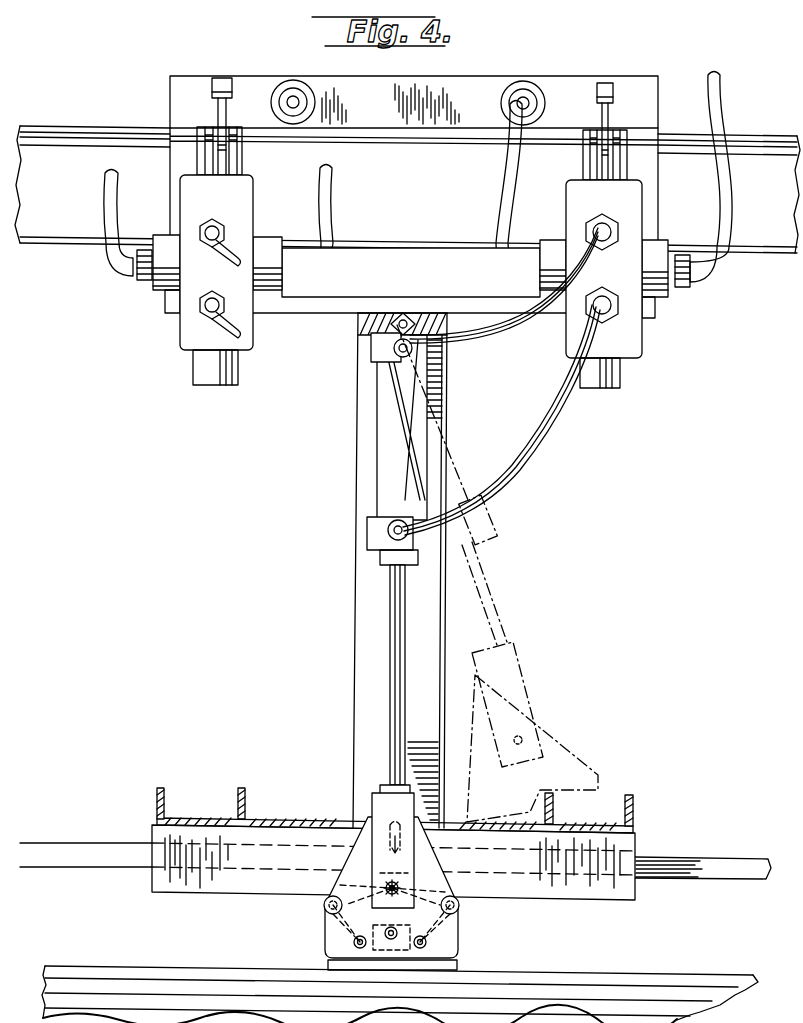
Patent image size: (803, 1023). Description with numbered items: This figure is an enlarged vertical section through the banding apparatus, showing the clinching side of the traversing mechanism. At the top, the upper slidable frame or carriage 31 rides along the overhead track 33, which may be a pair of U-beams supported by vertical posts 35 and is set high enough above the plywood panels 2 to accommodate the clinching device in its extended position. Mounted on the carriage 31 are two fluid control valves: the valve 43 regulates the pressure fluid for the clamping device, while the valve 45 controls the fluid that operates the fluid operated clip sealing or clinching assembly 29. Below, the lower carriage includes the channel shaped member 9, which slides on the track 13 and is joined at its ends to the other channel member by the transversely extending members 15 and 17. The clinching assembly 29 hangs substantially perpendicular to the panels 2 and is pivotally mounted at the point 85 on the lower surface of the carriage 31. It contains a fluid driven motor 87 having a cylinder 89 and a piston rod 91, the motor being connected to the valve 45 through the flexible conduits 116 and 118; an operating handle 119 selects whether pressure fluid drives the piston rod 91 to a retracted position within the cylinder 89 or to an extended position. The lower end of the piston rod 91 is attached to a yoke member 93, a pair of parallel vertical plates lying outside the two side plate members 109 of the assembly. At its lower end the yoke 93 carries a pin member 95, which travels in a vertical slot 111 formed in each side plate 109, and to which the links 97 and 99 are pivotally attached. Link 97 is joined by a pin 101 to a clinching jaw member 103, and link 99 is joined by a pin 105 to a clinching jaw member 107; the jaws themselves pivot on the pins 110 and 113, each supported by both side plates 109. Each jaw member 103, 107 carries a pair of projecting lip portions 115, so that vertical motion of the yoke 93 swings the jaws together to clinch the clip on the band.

The panels 2 is at (552, 975).
The channel shaped member 9 is at (636, 850).
The track 13 is at (698, 856).
The transversely extending member 15 is at (634, 810).
The transversely extending member 17 is at (157, 800).
The clinching assembly 29 is at (341, 821).
The upper slidable frame or carriage 31 is at (345, 293).
The track 33 is at (776, 250).
The vertical posts 35 is at (354, 605).
The fluid control valve 43 is at (180, 322).
The fluid control valve 45 is at (642, 340).
The pivot point 85 is at (405, 318).
The fluid driven motor 87 is at (361, 449).
The cylinder 89 is at (377, 435).
The piston rod 91 is at (390, 640).
The yoke member 93 is at (384, 832).
The pin member 95 is at (400, 888).
The link 97 is at (436, 892).
The link 99 is at (340, 885).
The pin 101 is at (459, 914).
The clinching jaw member 103 is at (456, 931).
The pin 105 is at (326, 906).
The clinching jaw member 107 is at (330, 930).
The side plate members 109 is at (370, 866).
The pin 110 is at (426, 942).
The vertical slot 111 is at (385, 852).
The pin 113 is at (354, 942).
The projecting lip portions 115 is at (396, 962).
The flexible conduit 116 is at (503, 340).
The flexible conduit 118 is at (525, 440).
The operating handle 119 is at (604, 83).